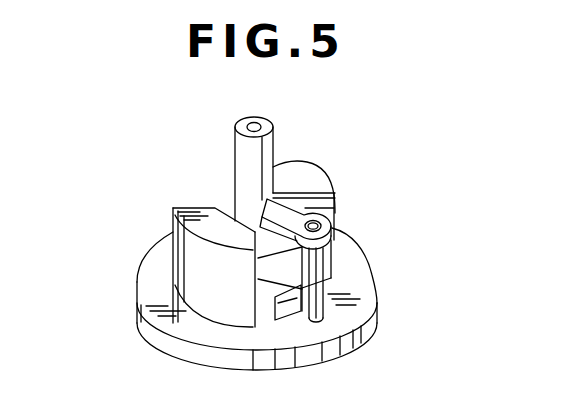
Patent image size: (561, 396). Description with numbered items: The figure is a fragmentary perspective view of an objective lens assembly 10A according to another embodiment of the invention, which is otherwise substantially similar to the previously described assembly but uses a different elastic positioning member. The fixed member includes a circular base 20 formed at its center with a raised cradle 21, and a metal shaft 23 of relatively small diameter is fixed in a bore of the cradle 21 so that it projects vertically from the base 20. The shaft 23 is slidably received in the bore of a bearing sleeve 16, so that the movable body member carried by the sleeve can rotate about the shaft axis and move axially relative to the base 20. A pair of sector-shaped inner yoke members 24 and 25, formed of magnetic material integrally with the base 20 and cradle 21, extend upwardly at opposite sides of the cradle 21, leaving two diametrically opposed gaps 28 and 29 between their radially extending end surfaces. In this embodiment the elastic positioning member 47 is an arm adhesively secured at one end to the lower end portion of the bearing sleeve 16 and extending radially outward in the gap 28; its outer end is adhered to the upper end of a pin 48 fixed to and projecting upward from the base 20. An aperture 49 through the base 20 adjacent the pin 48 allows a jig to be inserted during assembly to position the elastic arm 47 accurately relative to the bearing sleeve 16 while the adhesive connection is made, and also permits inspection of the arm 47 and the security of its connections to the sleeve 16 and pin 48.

The objective lens assembly 10A is at (335, 172).
The bearing sleeve 16 is at (243, 167).
The base 20 is at (370, 331).
The cradle 21 is at (255, 292).
The shaft 23 is at (253, 243).
The inner yoke member 24 is at (192, 258).
The inner yoke member 25 is at (300, 181).
The gap 28 is at (337, 213).
The gap 29 is at (198, 207).
The elastic positioning member 47 is at (336, 221).
The pin 48 is at (333, 267).
The aperture 49 is at (301, 308).